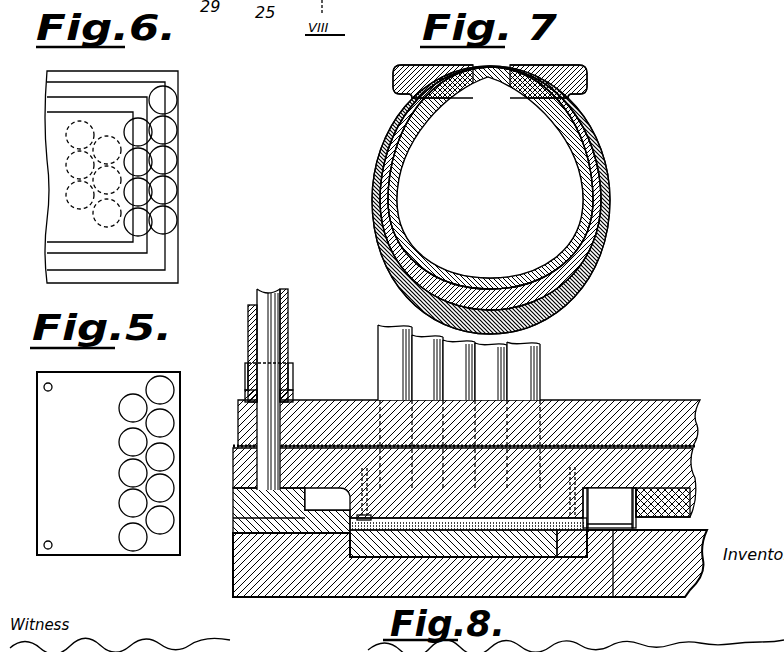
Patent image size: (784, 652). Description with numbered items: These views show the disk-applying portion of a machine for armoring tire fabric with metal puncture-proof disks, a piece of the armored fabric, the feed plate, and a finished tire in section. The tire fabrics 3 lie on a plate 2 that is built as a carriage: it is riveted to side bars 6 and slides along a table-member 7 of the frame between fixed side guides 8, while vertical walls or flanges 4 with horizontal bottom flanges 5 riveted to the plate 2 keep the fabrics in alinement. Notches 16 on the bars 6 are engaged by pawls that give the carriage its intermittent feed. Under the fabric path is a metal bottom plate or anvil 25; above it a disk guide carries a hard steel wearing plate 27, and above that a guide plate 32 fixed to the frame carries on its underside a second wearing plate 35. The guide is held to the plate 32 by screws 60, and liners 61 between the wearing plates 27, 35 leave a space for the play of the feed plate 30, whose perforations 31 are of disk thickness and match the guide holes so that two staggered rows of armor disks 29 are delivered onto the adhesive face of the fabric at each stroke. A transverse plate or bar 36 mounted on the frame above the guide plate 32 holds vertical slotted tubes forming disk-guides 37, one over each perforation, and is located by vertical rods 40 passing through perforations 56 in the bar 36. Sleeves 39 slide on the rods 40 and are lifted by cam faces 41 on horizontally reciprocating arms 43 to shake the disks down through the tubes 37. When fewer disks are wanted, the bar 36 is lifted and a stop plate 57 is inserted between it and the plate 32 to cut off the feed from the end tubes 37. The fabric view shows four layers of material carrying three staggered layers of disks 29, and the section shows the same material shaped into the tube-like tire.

In FIG. 8, the plate 2 is at (695, 537).
In FIG. 6, the tire fabrics 3 is at (57, 160).
In FIG. 7, the tire fabrics 3 is at (605, 238).
In FIG. 8, the tire fabrics 3 is at (380, 530).
In FIG. 8, the walls or flanges 4 is at (630, 503).
In FIG. 8, the bottom flanges 5 is at (613, 598).
In FIG. 8, the side bars 6 is at (337, 517).
In FIG. 8, the table-member 7 is at (588, 598).
In FIG. 8, the side guides 8 is at (243, 506).
In FIG. 8, the notches 16 is at (327, 499).
In FIG. 8, the bottom plate or anvil 25 is at (537, 552).
In FIG. 8, the wearing plate 27 is at (557, 558).
In FIG. 6, the armor disks 29 is at (168, 160).
In FIG. 5, the feed plate 30 is at (108, 463).
In FIG. 8, the feed plate 30 is at (540, 490).
In FIG. 5, the perforations 31 is at (127, 498).
In FIG. 8, the guide plate 32 is at (236, 468).
In FIG. 8, the wearing plate 35 is at (396, 485).
In FIG. 8, the transverse plate or bar 36 is at (658, 405).
In FIG. 8, the disk-guides 37 is at (383, 340).
In FIG. 8, the sleeves 39 is at (249, 326).
In FIG. 8, the vertical rods 40 is at (267, 345).
In FIG. 8, the cam faces 41 is at (249, 392).
In FIG. 8, the reciprocating arms 43 is at (294, 376).
In FIG. 8, the perforations 56 is at (243, 428).
In FIG. 8, the stop plate 57 is at (697, 428).
In FIG. 8, the screws 60 is at (333, 537).
In FIG. 8, the liners 61 is at (347, 507).